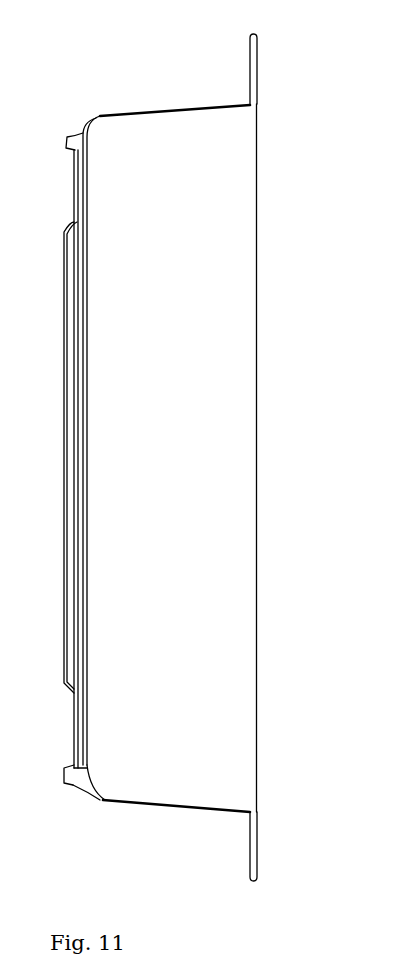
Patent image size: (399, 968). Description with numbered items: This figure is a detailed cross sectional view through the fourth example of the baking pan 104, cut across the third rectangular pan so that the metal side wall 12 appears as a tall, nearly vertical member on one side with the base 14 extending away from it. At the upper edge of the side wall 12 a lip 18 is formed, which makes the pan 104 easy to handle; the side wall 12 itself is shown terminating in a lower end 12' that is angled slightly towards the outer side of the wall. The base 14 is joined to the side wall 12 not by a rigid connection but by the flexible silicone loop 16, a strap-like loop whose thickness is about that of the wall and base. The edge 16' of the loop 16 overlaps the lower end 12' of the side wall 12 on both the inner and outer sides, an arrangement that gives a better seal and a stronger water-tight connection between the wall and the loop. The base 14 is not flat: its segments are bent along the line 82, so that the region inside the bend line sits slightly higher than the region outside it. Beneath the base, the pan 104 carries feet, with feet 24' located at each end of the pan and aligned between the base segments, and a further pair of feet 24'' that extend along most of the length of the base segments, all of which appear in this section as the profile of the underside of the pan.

The side wall 12 is at (178, 475).
The lower end of the side wall 12' is at (111, 820).
The base 14 is at (90, 100).
The silicone loop 16 is at (81, 801).
The edge of the silicone loop 16' is at (122, 780).
The lip 18 is at (258, 862).
The feet 24' is at (42, 453).
The pair of feet 24'' is at (46, 467).
The bend line 82 is at (86, 772).
The baking pan 104 is at (157, 832).